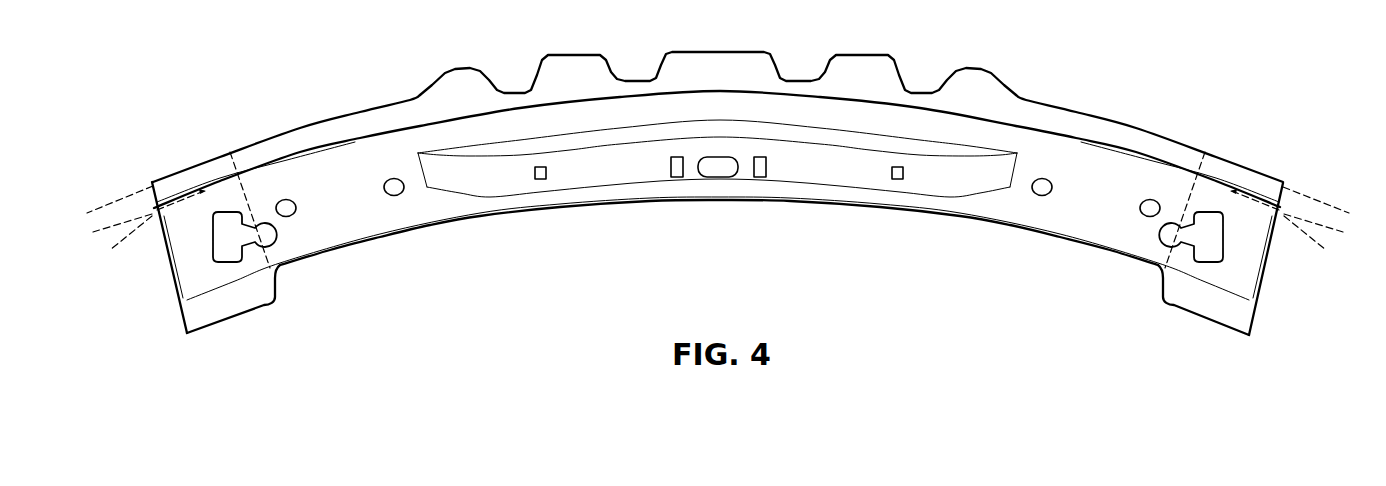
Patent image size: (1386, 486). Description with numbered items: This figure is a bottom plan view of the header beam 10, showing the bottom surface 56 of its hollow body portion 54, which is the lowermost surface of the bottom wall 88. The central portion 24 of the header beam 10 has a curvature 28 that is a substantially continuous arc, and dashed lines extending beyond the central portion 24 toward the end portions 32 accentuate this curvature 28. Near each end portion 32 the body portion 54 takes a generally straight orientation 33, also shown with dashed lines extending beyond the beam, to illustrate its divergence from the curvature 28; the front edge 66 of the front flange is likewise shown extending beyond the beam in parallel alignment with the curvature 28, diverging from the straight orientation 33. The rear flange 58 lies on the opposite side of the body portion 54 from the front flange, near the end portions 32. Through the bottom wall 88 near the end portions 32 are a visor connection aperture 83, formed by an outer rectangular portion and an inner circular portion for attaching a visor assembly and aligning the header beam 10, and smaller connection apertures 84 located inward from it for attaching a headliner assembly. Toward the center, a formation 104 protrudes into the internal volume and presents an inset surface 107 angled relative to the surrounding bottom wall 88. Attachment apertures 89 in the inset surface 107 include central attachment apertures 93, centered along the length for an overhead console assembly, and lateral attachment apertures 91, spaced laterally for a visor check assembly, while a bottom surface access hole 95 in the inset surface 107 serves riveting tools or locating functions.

The header beam 10 is at (401, 62).
The central portion 24 is at (1002, 62).
The curvature 28 is at (132, 245).
The end portions 32 is at (207, 275).
The straight orientation 33 is at (105, 231).
The body portion 54 is at (436, 204).
The bottom surface 56 is at (1082, 162).
The rear flange 58 is at (257, 292).
The front edge 66 is at (118, 193).
The visor connection aperture 83 is at (232, 237).
The connection apertures 84 is at (288, 217).
The bottom wall 88 is at (1125, 185).
The attachment apertures 89 is at (541, 179).
The lateral attachment apertures 91 is at (897, 179).
The central attachment apertures 93 is at (760, 177).
The bottom surface access hole 95 is at (721, 165).
The formation 104 is at (492, 198).
The inset surface 107 is at (853, 165).